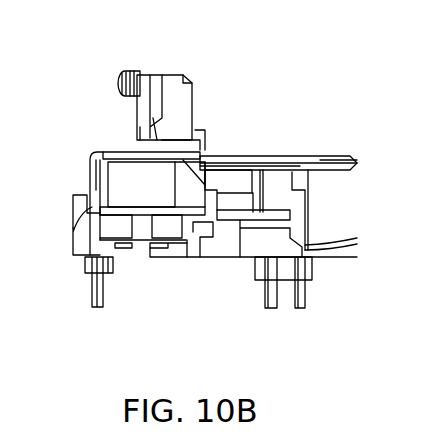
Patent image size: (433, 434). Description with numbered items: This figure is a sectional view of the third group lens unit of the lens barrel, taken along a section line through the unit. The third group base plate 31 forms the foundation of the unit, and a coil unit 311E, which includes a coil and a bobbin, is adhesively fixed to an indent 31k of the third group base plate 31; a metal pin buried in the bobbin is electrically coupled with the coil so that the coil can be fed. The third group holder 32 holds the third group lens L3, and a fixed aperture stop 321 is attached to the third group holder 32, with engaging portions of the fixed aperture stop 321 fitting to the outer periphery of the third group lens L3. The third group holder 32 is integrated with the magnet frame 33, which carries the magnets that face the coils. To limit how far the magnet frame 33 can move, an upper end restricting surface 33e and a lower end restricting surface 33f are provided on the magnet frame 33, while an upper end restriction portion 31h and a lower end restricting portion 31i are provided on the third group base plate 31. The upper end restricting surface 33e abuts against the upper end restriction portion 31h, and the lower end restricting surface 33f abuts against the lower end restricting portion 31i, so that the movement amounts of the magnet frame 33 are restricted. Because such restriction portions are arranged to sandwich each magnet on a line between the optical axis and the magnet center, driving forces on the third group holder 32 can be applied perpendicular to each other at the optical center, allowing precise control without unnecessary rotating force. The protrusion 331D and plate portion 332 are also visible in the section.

The third group base plate 31 is at (170, 90).
The magnet frame 33 is at (105, 158).
The protrusion 331D is at (199, 142).
The plate portion 332 is at (262, 157).
The fixed aperture stop 321 is at (301, 165).
The third group lens L3 is at (327, 160).
The upper end restricting surface 33e is at (90, 187).
The upper end restriction portion 31h is at (88, 200).
The indent 31k is at (88, 225).
The coil unit 311E is at (100, 245).
The lower end restricting surface 33f is at (200, 237).
The lower end restricting portion 31i is at (212, 217).
The third group holder 32 is at (307, 258).